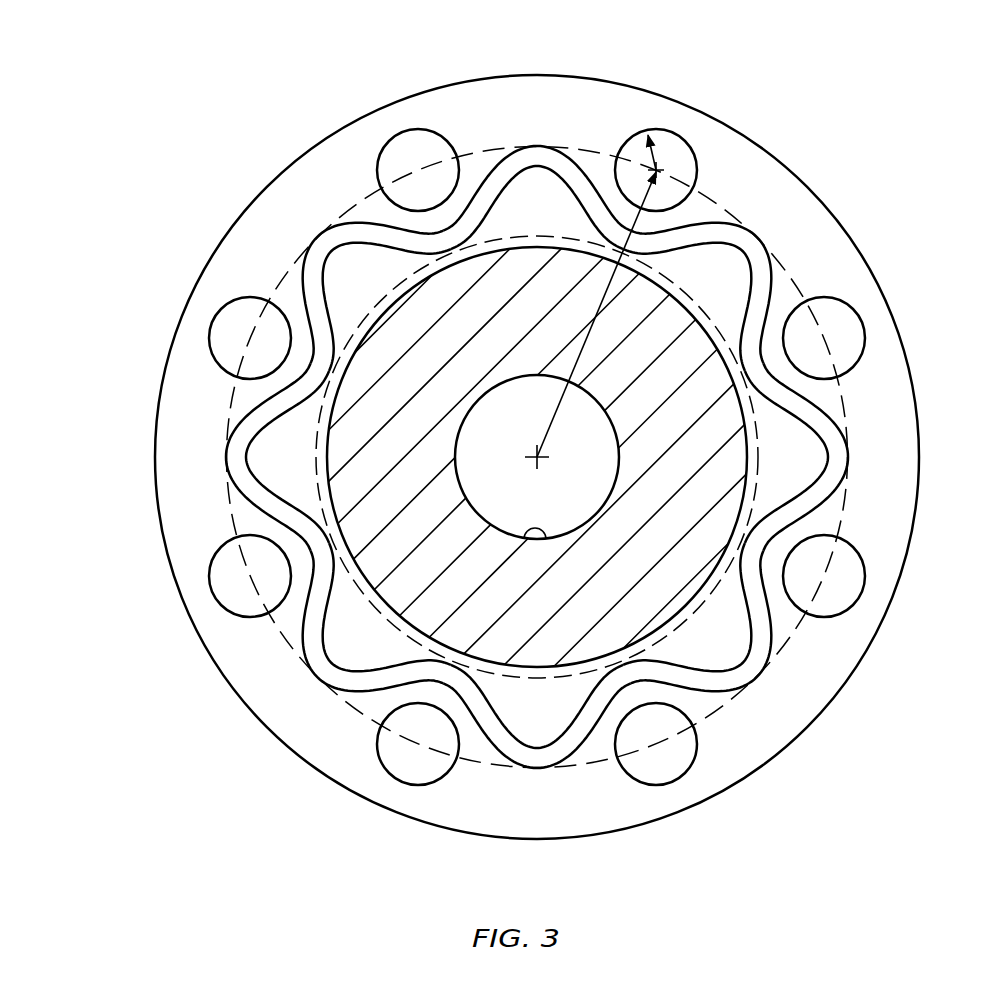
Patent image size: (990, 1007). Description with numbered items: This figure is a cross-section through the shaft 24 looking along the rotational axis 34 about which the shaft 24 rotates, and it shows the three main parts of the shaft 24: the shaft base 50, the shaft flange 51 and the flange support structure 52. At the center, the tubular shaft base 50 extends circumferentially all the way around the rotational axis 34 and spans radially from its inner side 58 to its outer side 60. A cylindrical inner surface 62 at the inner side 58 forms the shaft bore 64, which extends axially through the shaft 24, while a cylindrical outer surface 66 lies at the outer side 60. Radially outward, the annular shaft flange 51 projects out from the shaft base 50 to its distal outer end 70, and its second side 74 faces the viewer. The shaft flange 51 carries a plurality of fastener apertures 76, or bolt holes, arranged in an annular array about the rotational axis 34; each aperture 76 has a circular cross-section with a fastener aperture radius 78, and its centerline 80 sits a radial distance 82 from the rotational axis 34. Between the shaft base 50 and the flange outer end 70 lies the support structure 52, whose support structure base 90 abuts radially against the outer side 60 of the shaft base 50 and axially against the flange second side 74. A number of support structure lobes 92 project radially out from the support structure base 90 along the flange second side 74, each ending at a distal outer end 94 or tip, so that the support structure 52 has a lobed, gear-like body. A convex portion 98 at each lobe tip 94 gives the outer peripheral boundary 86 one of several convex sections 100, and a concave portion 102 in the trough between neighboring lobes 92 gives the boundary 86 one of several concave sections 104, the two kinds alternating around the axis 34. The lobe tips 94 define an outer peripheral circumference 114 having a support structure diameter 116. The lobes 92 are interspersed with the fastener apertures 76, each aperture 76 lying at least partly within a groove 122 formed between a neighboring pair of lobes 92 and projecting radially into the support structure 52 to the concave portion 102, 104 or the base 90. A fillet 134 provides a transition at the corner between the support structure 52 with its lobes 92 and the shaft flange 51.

The shaft 24 is at (884, 124).
The rotational axis 34 is at (540, 460).
The shaft base 50 is at (705, 318).
The shaft flange 51 is at (887, 280).
The flange support structure 52 is at (840, 413).
The inner side of the shaft base 58 is at (520, 570).
The inner surface of the shaft base 62 is at (535, 545).
The outer side of the shaft base 60 is at (537, 457).
The outer surface of the shaft base 66 is at (697, 600).
The shaft bore 64 is at (483, 452).
The distal outer end of the shaft flange 70 is at (897, 322).
The second side of the shaft flange 74 is at (887, 360).
The fastener apertures 76 is at (789, 357).
The fastener aperture radius 78 is at (667, 145).
The centerline of the fastener aperture 80 is at (668, 168).
The radial distance 82 is at (541, 452).
The outer peripheral boundary of the support structure 86 is at (305, 672).
The support structure base 90 is at (312, 473).
The support structure lobes 92 is at (577, 150).
The distal outer end of the support structure lobe 94 is at (331, 222).
The convex portion 98 is at (193, 436).
The convex sections 100 is at (331, 220).
The concave portion 102 is at (288, 347).
The concave sections 104 is at (443, 232).
The outer peripheral circumference 114 is at (795, 634).
The support structure diameter 116 is at (573, 770).
The groove 122 is at (389, 220).
The fillet 134 is at (354, 680).